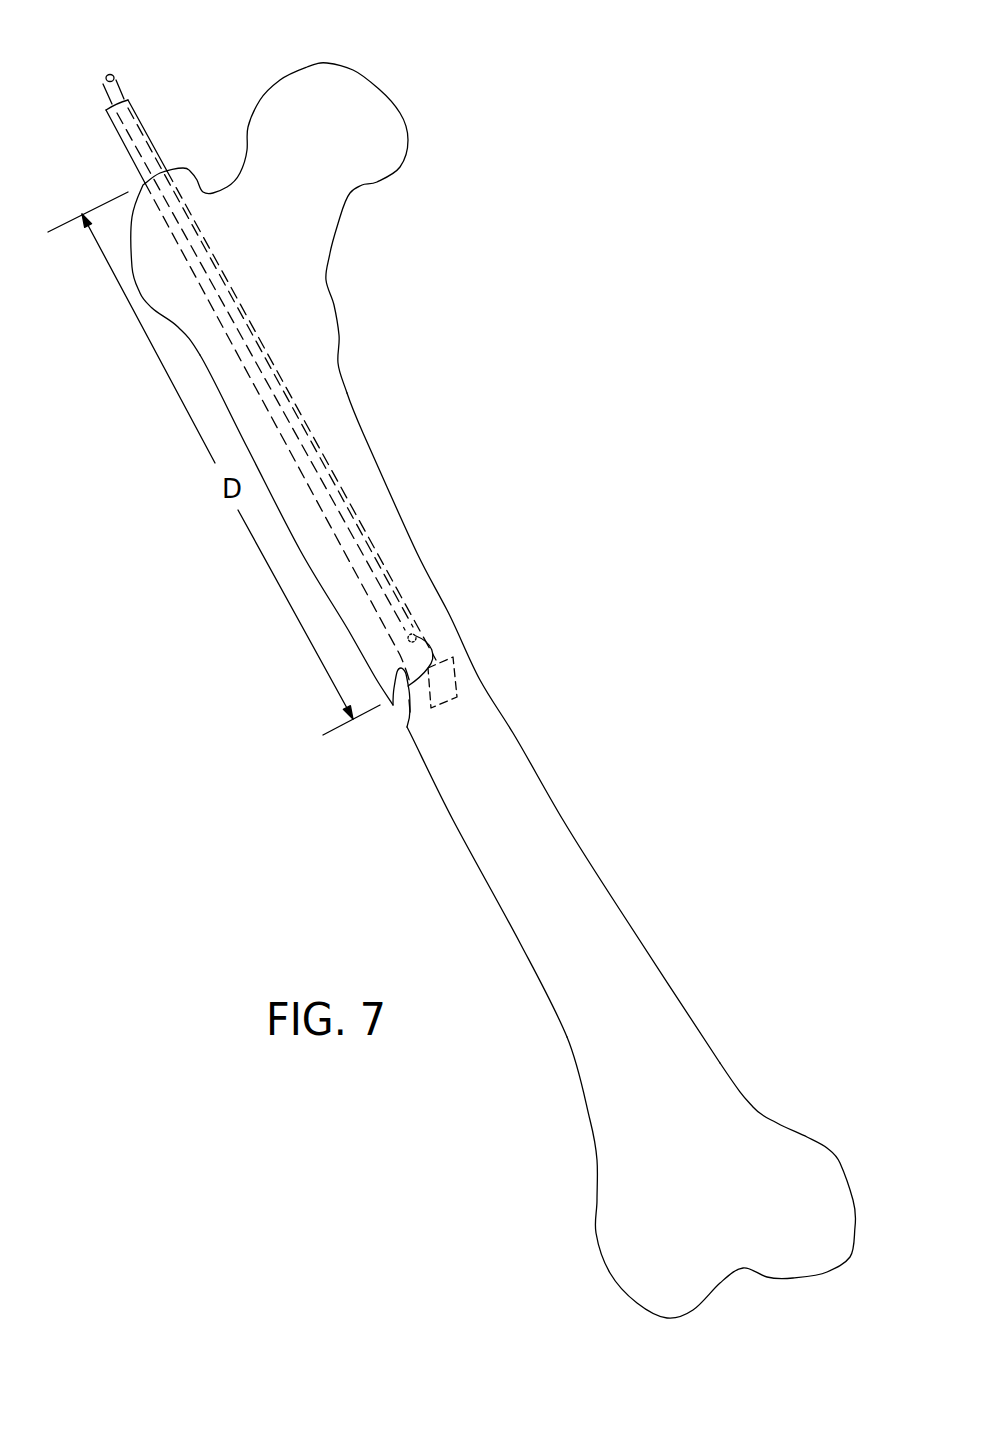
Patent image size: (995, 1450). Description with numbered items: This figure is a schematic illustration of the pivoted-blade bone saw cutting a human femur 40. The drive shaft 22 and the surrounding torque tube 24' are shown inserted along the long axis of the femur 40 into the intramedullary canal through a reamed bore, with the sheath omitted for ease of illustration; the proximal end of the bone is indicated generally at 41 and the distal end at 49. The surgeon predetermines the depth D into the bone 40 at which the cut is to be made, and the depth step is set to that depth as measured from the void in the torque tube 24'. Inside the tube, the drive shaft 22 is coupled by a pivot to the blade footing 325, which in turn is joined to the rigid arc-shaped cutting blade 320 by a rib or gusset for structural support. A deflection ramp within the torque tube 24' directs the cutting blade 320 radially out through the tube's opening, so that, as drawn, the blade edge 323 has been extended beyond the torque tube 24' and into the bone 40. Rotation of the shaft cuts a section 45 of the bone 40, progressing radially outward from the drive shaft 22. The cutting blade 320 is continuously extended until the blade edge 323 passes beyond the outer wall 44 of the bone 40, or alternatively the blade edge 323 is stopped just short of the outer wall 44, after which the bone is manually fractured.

The drive shaft 22 is at (115, 79).
The torque tube 24' is at (249, 391).
The femur 40 is at (550, 861).
The proximal femur / femoral head 41 is at (234, 78).
The outer wall 44 is at (513, 734).
The section 45 is at (453, 660).
The distal femur / intercondylar notch 49 is at (740, 1295).
The cutting blade 320 is at (392, 710).
The blade edge 323 is at (408, 722).
The blade footing 325 is at (430, 636).